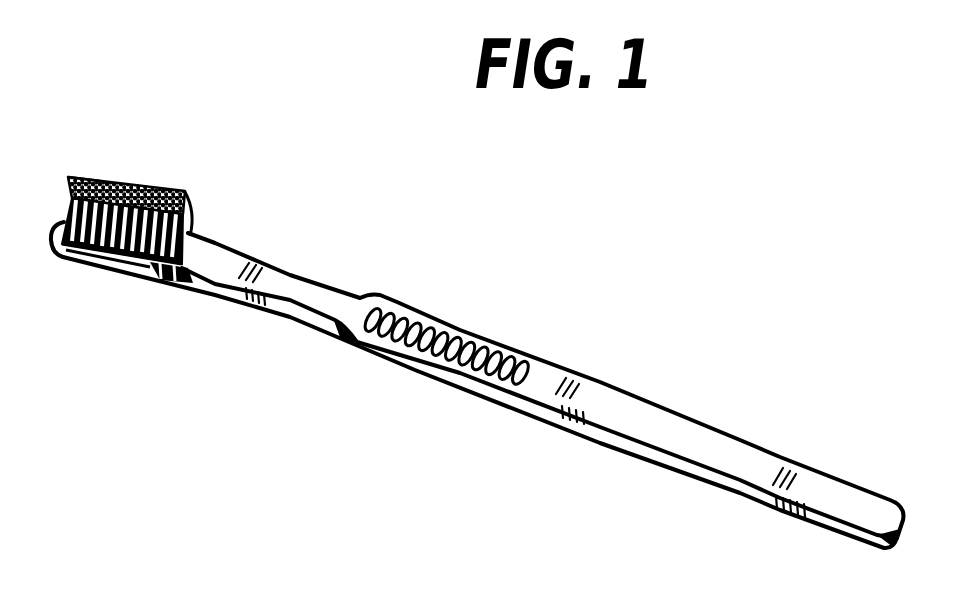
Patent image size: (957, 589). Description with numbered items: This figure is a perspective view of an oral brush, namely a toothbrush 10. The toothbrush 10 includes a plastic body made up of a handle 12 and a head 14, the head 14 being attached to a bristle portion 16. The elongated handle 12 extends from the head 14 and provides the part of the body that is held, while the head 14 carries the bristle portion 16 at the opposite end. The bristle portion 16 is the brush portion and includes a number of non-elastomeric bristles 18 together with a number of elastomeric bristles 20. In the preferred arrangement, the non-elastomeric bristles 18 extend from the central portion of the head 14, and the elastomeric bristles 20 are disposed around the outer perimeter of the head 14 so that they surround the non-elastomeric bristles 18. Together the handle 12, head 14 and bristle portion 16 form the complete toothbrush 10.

The toothbrush 10 is at (432, 245).
The handle 12 is at (643, 398).
The head 14 is at (146, 262).
The bristle portion 16 is at (177, 175).
The non-elastomeric bristles 18 is at (80, 177).
The elastomeric bristles 20 is at (142, 177).